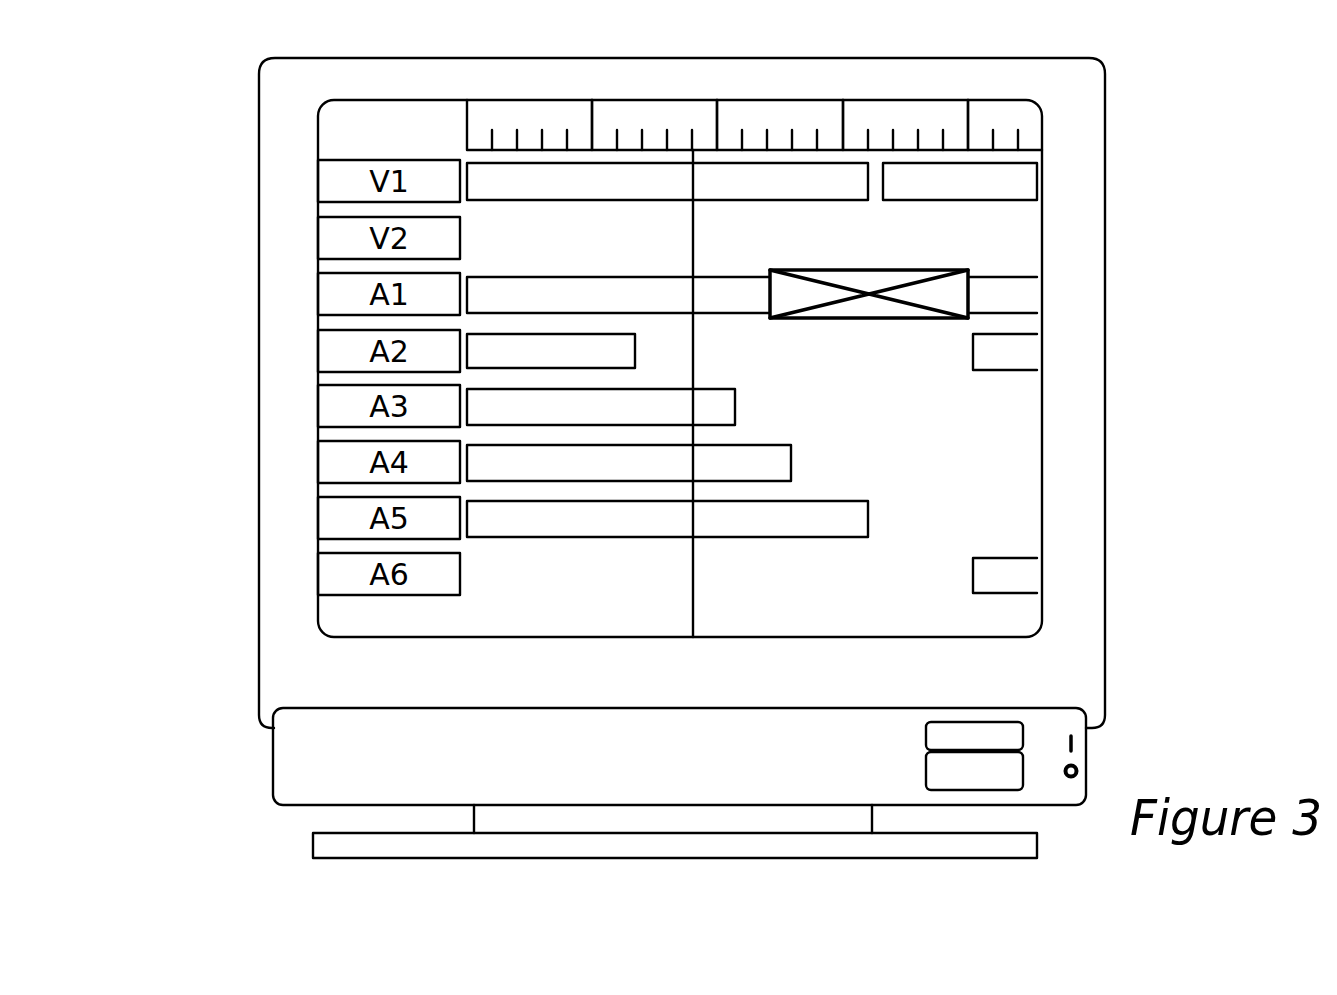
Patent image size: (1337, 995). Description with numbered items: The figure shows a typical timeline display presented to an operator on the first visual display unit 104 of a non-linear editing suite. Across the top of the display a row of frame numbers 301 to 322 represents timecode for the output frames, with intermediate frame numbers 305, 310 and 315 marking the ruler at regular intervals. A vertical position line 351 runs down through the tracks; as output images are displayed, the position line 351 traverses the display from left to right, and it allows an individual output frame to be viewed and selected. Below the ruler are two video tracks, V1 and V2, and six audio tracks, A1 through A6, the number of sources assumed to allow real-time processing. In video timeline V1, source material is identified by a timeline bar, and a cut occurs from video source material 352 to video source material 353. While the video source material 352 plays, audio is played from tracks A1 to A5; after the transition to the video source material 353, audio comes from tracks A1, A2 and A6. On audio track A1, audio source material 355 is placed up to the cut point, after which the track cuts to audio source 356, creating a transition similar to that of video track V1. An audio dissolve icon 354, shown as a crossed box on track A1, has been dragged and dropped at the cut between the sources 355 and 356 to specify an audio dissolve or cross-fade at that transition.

The visual display unit 104 is at (1078, 480).
The frame number 301 is at (495, 132).
The frame number 305 is at (597, 112).
The frame number 310 is at (718, 112).
The frame number 315 is at (862, 101).
The frame number 322 is at (1030, 118).
The vertical position line 351 is at (693, 233).
The video source material 352 is at (487, 178).
The video source material 353 is at (1030, 185).
The audio dissolve icon 354 is at (953, 297).
The audio source material 355 is at (520, 290).
The audio source 356 is at (1030, 291).